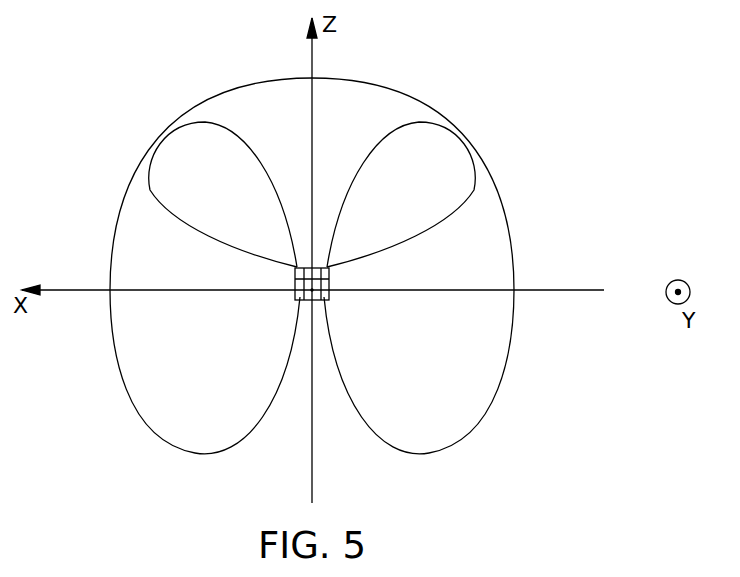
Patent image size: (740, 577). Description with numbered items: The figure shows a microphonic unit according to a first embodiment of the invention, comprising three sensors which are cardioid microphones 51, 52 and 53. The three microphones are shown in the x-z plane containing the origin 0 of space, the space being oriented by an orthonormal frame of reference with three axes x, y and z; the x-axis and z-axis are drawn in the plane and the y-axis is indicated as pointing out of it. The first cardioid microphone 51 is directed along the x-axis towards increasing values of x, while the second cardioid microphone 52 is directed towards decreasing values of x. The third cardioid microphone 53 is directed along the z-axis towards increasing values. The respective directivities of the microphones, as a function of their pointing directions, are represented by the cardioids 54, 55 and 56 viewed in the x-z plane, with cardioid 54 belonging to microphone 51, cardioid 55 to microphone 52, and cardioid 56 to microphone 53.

The origin 0 is at (322, 292).
The first cardioid microphone 51 is at (292, 332).
The second cardioid microphone 52 is at (332, 335).
The third cardioid microphone 53 is at (328, 270).
The cardioid 54 is at (125, 383).
The cardioid 55 is at (498, 383).
The cardioid 56 is at (391, 90).